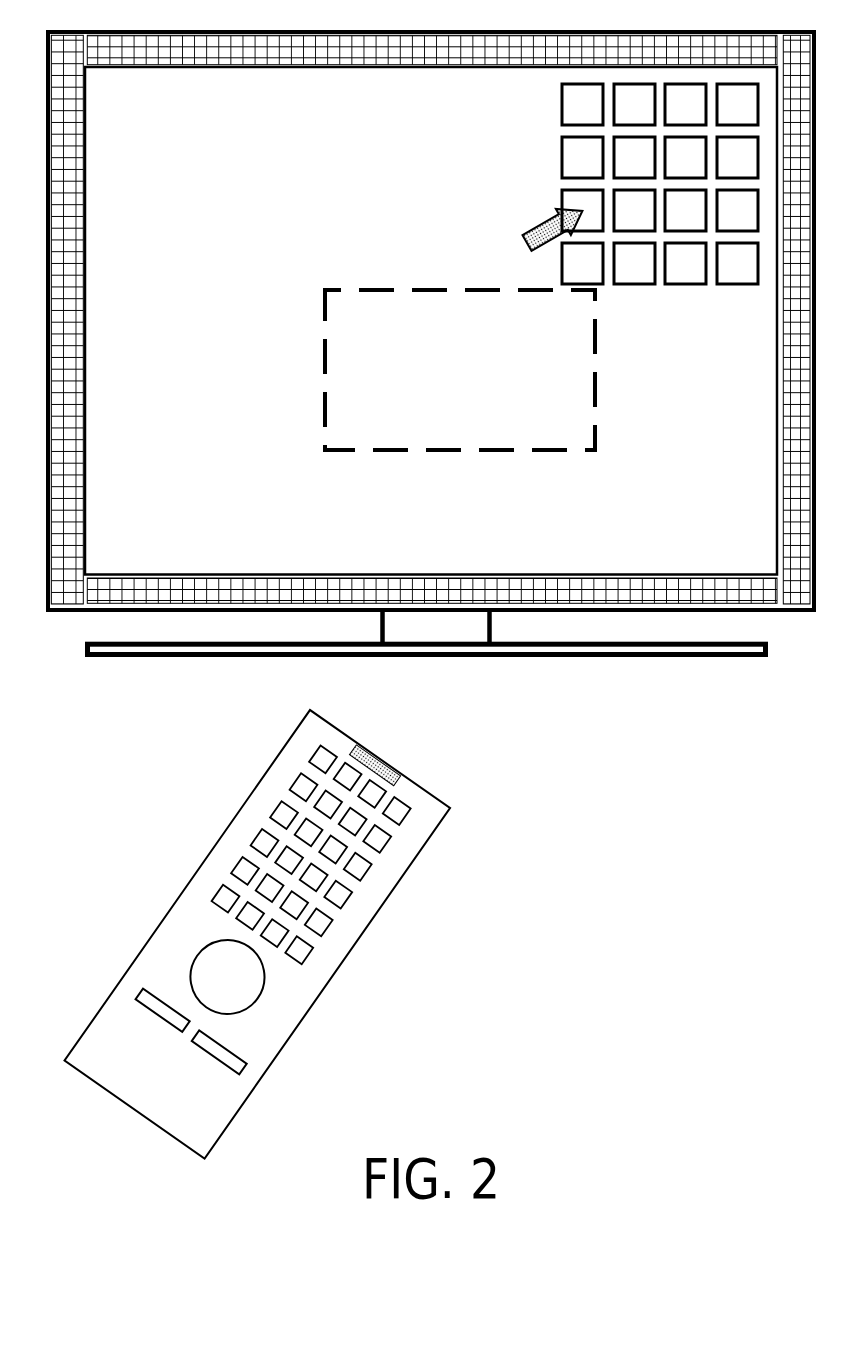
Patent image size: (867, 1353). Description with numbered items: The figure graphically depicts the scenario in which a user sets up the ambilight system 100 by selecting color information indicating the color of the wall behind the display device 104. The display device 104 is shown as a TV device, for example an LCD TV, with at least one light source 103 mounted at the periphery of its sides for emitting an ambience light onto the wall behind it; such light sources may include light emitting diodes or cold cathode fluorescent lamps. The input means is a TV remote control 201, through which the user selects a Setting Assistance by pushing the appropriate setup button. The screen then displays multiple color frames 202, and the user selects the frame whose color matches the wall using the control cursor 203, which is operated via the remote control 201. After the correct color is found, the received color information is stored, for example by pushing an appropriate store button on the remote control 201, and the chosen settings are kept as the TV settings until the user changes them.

The display device 104 is at (156, 123).
The light source 103 is at (230, 592).
The ambilight system 100 is at (378, 290).
The color frames 202 is at (507, 144).
The control cursor 203 is at (537, 228).
The remote control 201 is at (302, 742).